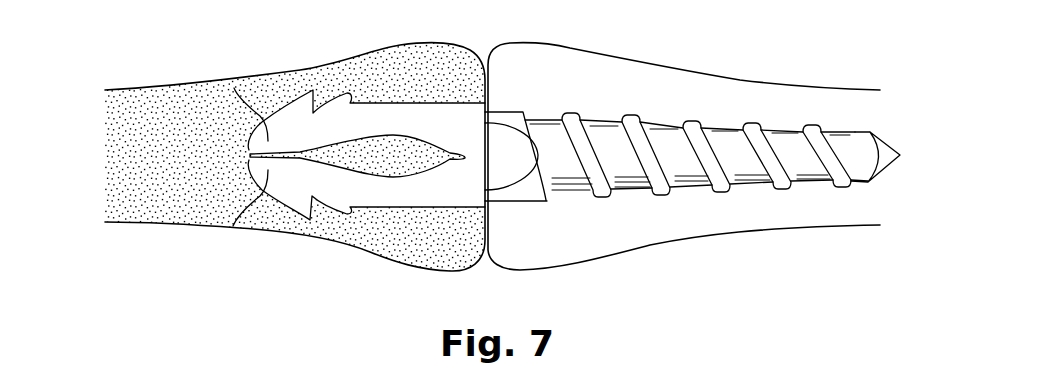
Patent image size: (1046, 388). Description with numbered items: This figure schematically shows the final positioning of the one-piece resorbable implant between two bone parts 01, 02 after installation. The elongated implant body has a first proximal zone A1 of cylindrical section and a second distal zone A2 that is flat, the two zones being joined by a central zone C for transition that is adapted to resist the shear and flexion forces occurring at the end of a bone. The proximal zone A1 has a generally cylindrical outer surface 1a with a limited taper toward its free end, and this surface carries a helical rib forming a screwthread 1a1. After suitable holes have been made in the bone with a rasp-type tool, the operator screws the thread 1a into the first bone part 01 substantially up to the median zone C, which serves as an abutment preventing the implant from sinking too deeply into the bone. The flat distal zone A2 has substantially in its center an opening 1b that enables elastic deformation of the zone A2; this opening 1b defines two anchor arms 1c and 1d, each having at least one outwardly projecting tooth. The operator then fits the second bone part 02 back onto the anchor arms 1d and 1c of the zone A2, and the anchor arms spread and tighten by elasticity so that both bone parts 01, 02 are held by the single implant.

The bone part 01 is at (684, 156).
The bone part 02 is at (295, 157).
The first proximal zone A1 is at (712, 156).
The second distal zone A2 is at (351, 135).
The central zone C is at (507, 111).
The cylindrical outer surface 1a is at (683, 178).
The screwthread 1a1 is at (708, 148).
The opening 1b is at (403, 153).
The anchor arm 1c is at (233, 226).
The anchor arm 1d is at (234, 88).